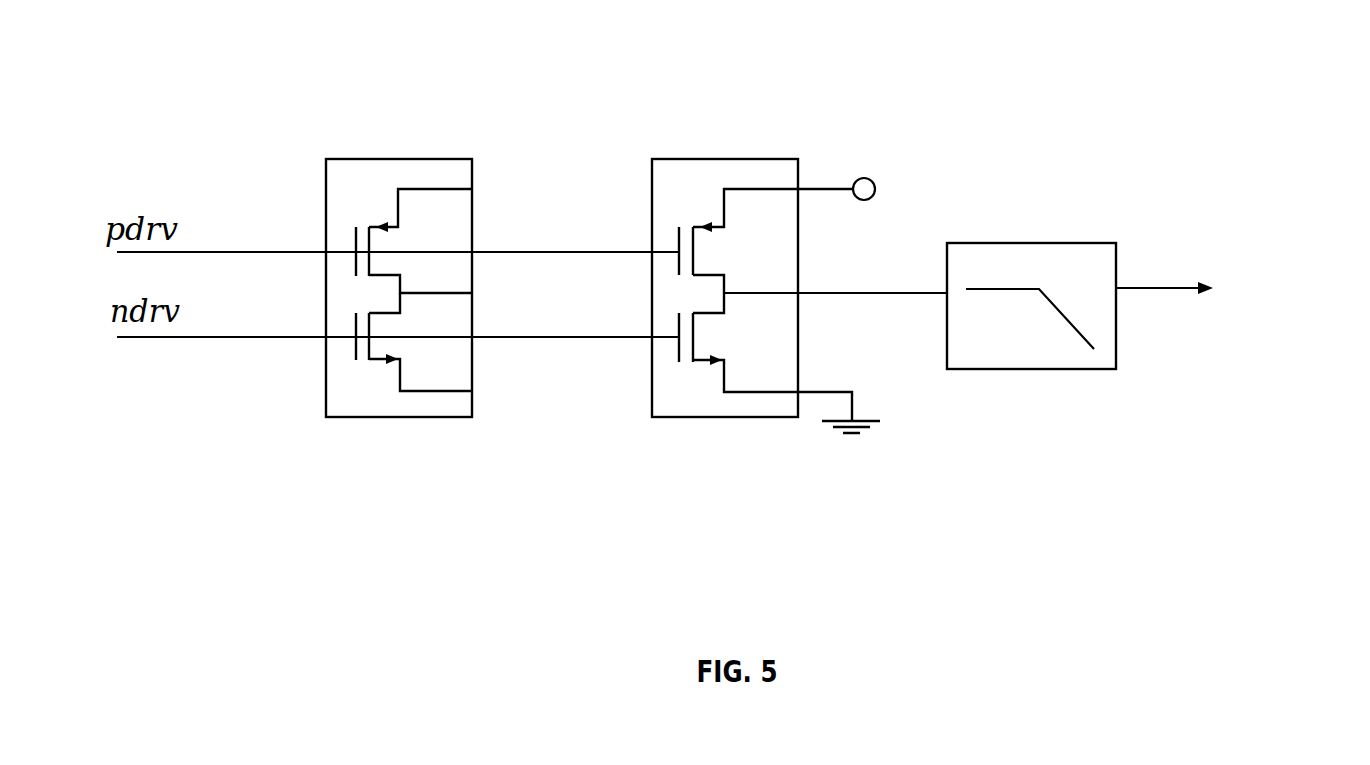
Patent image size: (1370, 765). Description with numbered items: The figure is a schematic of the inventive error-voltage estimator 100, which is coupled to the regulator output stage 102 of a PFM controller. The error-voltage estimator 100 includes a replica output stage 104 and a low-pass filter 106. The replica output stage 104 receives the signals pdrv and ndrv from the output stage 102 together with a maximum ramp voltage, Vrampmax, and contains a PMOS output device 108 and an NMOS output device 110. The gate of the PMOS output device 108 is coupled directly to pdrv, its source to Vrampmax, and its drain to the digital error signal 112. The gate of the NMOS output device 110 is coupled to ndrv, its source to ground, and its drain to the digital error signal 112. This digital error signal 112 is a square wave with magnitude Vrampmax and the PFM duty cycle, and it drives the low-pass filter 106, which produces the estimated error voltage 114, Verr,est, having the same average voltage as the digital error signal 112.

The error-voltage estimator 100 is at (970, 56).
The output stage 102 is at (472, 159).
The replica output stage 104 is at (778, 294).
The low-pass filter 106 is at (1041, 383).
The PMOS output device 108 is at (676, 210).
The NMOS output device 110 is at (675, 375).
The digital error signal 112 is at (890, 293).
The estimated error voltage 114 is at (1163, 295).